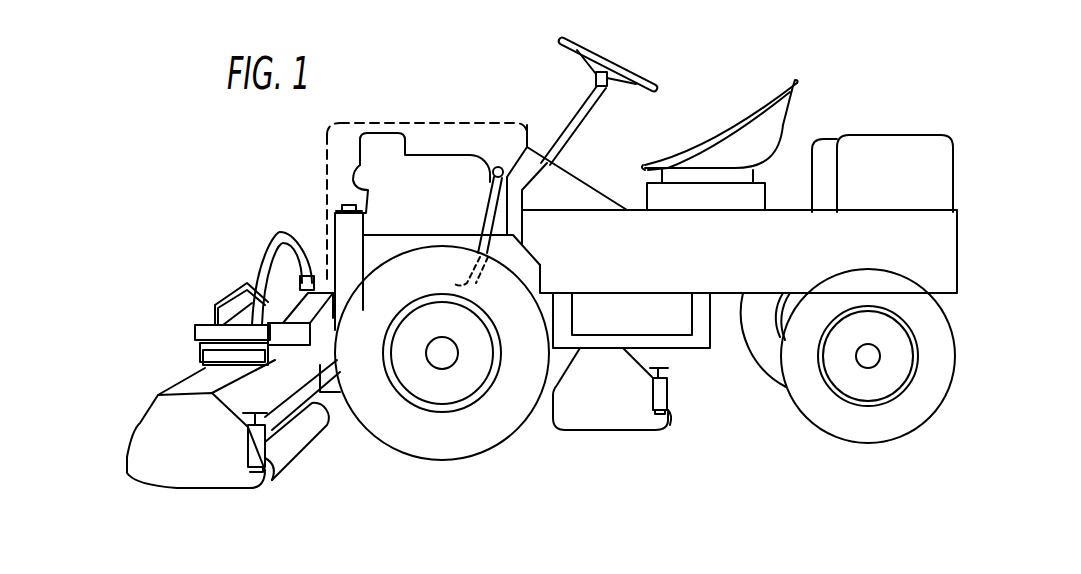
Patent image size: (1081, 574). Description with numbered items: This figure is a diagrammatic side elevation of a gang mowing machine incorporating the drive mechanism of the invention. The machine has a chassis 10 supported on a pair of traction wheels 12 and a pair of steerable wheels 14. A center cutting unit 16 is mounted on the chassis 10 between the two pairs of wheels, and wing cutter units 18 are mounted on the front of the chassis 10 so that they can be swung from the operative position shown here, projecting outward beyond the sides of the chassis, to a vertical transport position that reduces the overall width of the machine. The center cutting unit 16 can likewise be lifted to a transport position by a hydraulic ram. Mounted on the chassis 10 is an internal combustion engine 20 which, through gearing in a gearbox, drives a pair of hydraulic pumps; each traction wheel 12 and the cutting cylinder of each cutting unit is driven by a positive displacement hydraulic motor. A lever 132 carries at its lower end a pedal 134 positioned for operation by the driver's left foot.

The chassis 10 is at (733, 282).
The traction wheels 12 is at (507, 427).
The steerable wheels 14 is at (938, 405).
The center cutting unit 16 is at (622, 418).
The wing cutter units 18 is at (152, 423).
The internal combustion engine 20 is at (441, 208).
The lever 132 is at (488, 167).
The pedal 134 is at (478, 282).